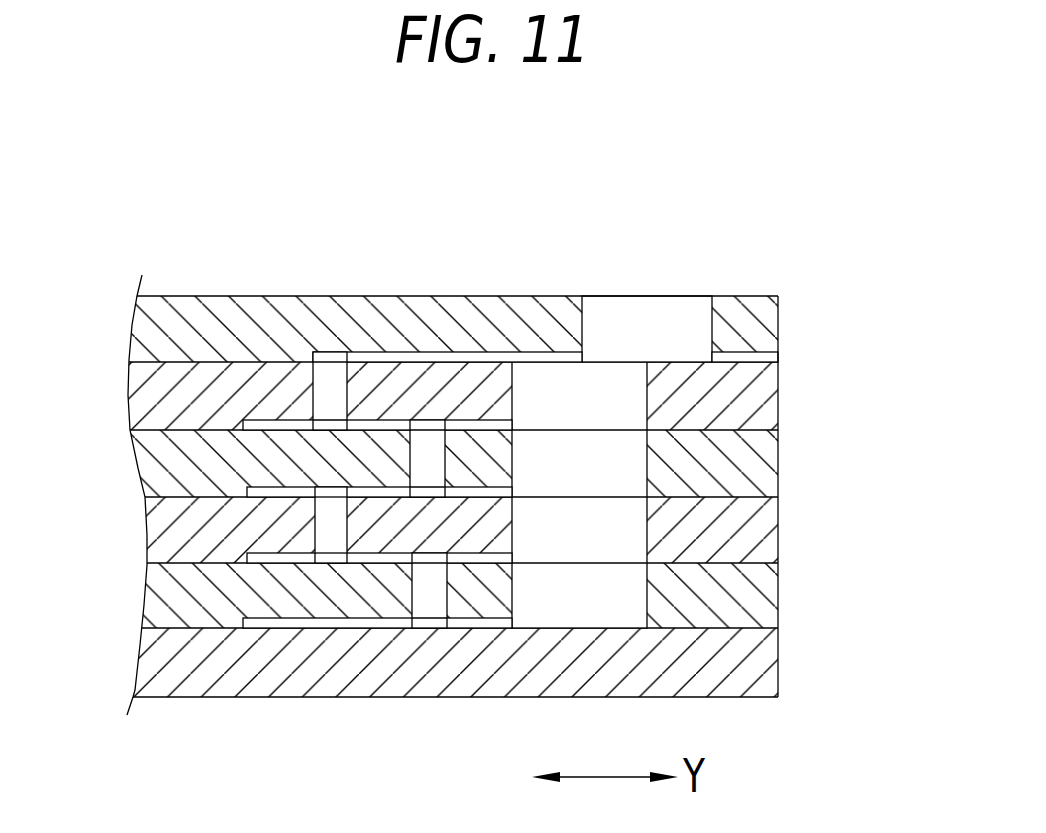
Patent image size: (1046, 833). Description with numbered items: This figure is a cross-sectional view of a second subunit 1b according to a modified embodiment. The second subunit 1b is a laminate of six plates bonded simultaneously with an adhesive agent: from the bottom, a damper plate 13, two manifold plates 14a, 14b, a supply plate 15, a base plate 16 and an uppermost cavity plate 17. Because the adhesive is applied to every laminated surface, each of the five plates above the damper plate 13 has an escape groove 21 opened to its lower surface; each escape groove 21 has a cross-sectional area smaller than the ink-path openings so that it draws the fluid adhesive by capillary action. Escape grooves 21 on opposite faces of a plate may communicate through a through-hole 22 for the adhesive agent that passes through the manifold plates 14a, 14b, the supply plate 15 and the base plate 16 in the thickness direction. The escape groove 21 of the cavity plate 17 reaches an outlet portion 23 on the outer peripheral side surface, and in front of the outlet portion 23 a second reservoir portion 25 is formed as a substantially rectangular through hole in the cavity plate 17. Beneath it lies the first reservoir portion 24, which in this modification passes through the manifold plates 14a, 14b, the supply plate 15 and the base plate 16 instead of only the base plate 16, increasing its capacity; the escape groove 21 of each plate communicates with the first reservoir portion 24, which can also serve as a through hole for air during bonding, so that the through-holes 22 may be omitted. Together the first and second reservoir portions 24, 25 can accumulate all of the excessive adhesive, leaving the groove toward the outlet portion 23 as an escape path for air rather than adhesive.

The second subunit 1b is at (893, 327).
The damper plate 13 is at (758, 665).
The manifold plate 14a is at (757, 603).
The manifold plate 14b is at (755, 530).
The supply plate 15 is at (750, 460).
The base plate 16 is at (748, 397).
The cavity plate 17 is at (763, 318).
The escape groove 21 is at (407, 355).
The through-hole 22 is at (415, 478).
The outlet portion 23 is at (733, 343).
The first reservoir portion 24 is at (637, 397).
The second reservoir portion 25 is at (583, 323).